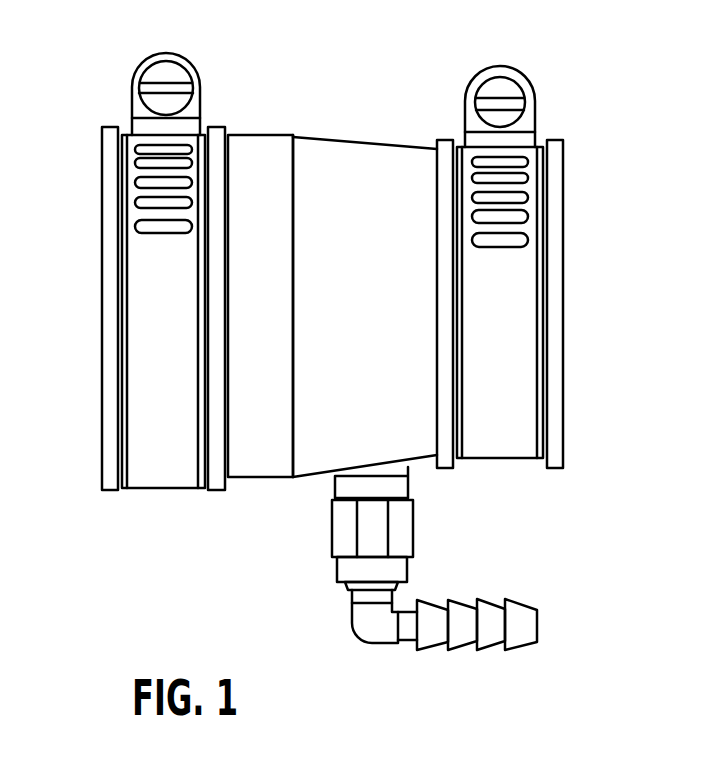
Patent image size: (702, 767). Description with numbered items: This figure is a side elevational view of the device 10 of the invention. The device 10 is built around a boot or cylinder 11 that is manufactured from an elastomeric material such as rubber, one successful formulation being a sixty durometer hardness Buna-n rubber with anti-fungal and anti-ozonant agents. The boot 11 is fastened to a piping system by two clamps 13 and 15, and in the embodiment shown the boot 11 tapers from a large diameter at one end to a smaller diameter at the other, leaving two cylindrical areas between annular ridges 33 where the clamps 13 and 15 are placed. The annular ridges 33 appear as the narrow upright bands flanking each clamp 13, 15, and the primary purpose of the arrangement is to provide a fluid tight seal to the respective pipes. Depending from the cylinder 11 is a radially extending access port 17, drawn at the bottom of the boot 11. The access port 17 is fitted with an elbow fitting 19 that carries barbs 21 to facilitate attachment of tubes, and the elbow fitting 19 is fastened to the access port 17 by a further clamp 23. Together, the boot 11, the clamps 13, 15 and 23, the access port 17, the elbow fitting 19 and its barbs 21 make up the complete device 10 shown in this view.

The device 10 is at (356, 122).
The boot or cylinder 11 is at (281, 135).
The clamp 13 is at (160, 490).
The clamp 15 is at (508, 458).
The access port 17 is at (408, 572).
The elbow fitting 19 is at (363, 632).
The barbs 21 is at (505, 650).
The clamp 23 is at (340, 542).
The annular ridges 33 is at (102, 127).